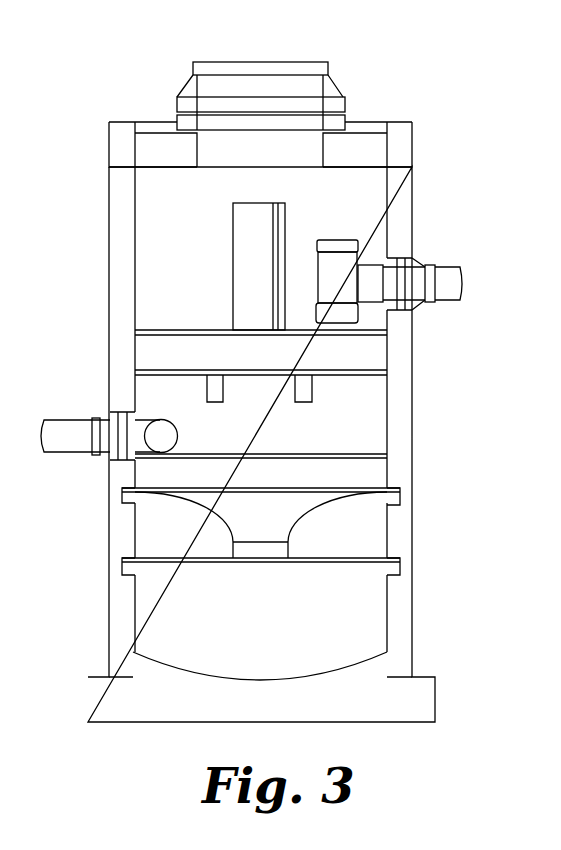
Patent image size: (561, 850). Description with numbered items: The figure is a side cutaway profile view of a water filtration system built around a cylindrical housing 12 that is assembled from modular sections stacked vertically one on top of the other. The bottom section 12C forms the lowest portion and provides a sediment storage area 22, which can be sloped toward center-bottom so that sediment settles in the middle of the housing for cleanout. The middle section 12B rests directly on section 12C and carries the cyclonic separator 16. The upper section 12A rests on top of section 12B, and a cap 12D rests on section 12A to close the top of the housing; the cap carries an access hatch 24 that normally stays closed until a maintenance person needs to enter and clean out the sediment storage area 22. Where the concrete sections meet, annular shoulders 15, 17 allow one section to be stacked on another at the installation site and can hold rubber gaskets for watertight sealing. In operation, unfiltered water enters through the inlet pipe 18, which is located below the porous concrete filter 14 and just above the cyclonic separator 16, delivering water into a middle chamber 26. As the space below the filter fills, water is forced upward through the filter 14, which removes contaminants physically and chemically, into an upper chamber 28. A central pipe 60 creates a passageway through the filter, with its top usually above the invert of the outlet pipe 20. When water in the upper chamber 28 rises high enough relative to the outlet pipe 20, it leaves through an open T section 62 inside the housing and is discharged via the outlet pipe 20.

The cylindrical housing 12 is at (61, 686).
The upper modular section 12A is at (110, 305).
The middle modular section 12B is at (110, 530).
The bottom modular section 12C is at (110, 630).
The cap 12D is at (363, 142).
The access hatch 24 is at (267, 62).
The upper chamber 28 is at (374, 204).
The central pipe 60 is at (233, 253).
The open T section 62 is at (330, 240).
The outlet pipe 20 is at (442, 265).
The porous concrete filter 14 is at (357, 366).
The inlet pipe 18 is at (70, 415).
The middle chamber 26 is at (364, 434).
The annular shoulder 15 is at (403, 500).
The annular shoulder 17 is at (410, 567).
The cyclonic separator 16 is at (173, 531).
The sediment storage area 22 is at (362, 604).